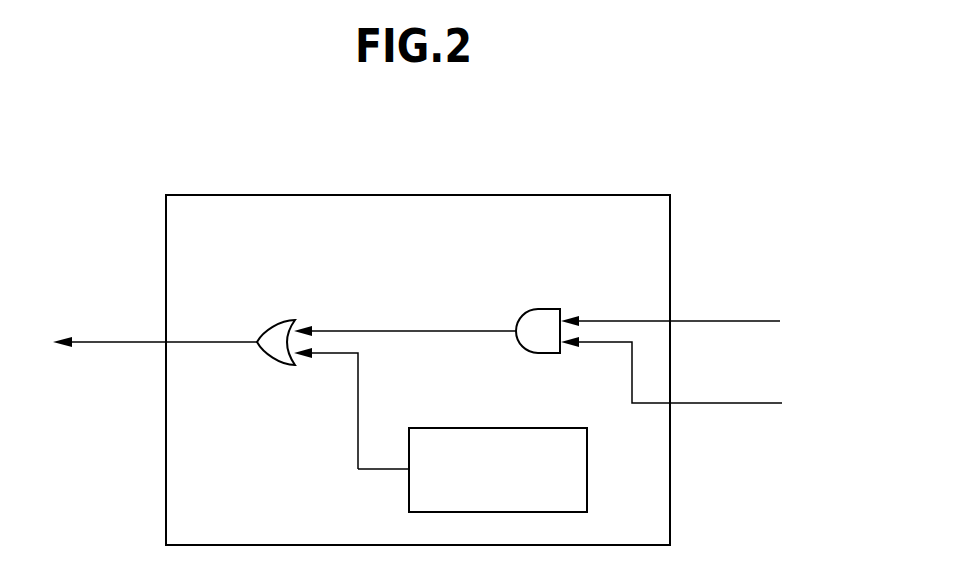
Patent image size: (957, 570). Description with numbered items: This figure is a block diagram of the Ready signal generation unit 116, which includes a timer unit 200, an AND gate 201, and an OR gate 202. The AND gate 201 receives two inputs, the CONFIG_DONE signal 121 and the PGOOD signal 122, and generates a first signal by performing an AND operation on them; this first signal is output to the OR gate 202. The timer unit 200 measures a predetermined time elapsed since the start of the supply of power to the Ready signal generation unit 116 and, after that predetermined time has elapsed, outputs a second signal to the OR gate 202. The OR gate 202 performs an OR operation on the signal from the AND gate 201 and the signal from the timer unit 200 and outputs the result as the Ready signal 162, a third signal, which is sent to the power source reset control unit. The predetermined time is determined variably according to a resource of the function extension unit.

The Ready signal generation unit 116 is at (395, 195).
The AND gate 201 is at (545, 309).
The OR gate 202 is at (292, 319).
The timer unit 200 is at (504, 428).
The CONFIG_DONE signal 121 is at (725, 403).
The PGOOD signal 122 is at (724, 321).
The Ready signal 162 is at (118, 342).